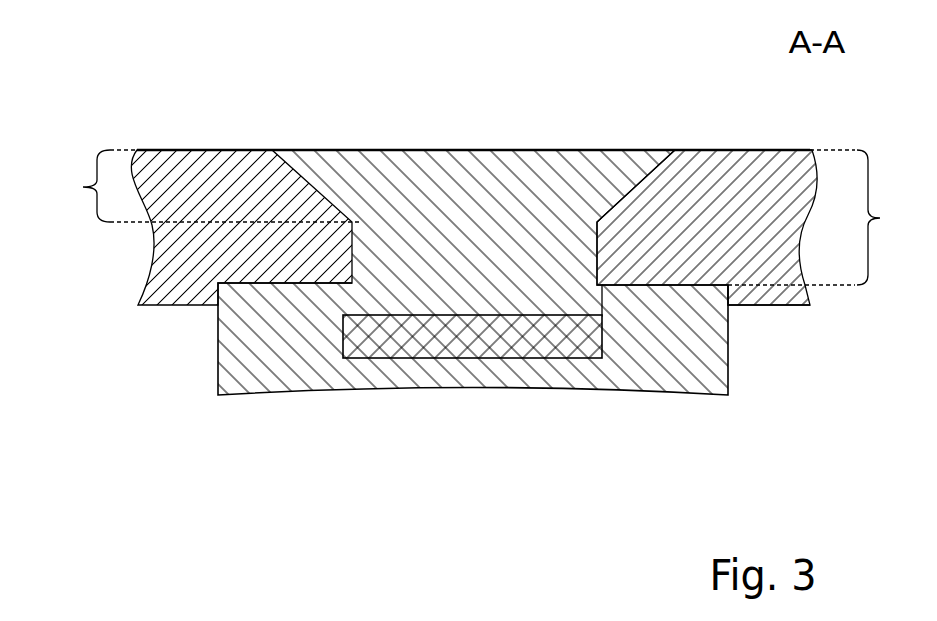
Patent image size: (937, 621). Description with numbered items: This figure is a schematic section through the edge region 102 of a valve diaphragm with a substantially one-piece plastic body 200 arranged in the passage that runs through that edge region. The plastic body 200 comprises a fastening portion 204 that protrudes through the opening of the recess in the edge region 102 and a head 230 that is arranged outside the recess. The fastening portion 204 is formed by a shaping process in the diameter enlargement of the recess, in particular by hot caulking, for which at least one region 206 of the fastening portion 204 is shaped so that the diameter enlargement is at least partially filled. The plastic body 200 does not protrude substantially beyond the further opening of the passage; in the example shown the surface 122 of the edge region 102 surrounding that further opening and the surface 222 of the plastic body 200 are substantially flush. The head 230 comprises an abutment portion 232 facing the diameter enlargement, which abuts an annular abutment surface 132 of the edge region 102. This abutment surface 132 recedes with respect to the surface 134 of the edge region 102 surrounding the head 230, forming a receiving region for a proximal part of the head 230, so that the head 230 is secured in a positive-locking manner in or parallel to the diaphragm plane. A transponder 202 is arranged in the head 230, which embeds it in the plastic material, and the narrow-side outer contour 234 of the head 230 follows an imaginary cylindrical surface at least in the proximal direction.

The edge region 102 is at (183, 172).
The surface of the edge region 122 is at (210, 150).
The surface of the plastic body 222 is at (313, 150).
The abutment portion 232 is at (660, 270).
The region of the fastening portion 206 is at (71, 186).
The fastening portion 204 is at (892, 217).
The narrow-side outer contour 234 is at (218, 357).
The head 230 is at (678, 347).
The plastic body 200 is at (312, 307).
The transponder 202 is at (486, 357).
The abutment surface 132 is at (640, 300).
The surface of the edge region surrounding the head 134 is at (778, 306).